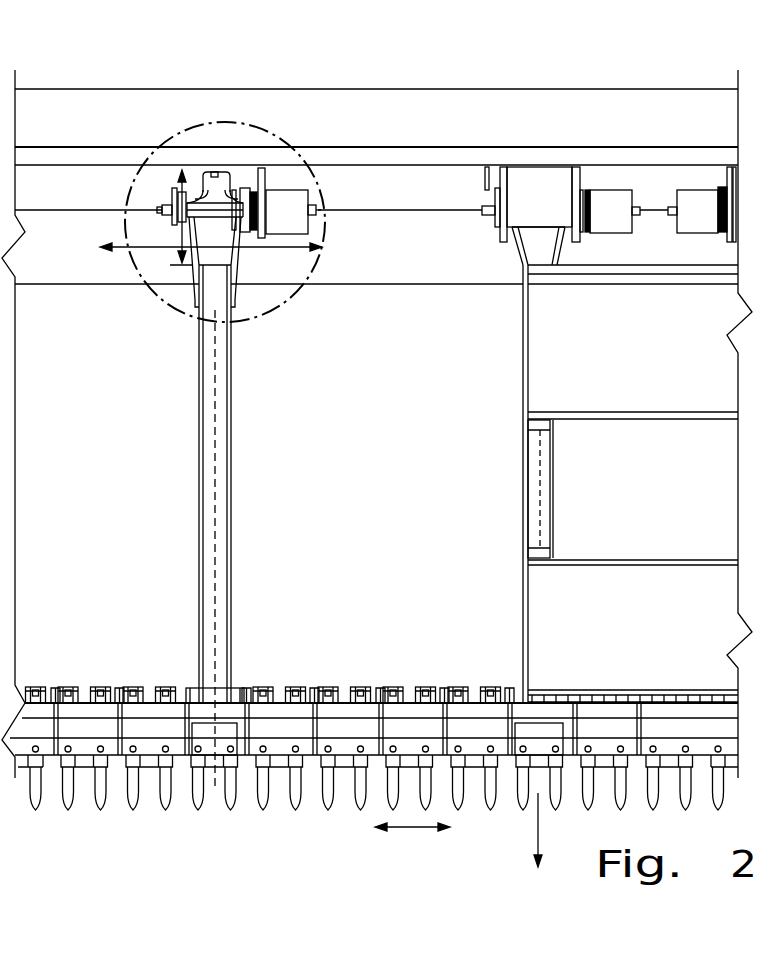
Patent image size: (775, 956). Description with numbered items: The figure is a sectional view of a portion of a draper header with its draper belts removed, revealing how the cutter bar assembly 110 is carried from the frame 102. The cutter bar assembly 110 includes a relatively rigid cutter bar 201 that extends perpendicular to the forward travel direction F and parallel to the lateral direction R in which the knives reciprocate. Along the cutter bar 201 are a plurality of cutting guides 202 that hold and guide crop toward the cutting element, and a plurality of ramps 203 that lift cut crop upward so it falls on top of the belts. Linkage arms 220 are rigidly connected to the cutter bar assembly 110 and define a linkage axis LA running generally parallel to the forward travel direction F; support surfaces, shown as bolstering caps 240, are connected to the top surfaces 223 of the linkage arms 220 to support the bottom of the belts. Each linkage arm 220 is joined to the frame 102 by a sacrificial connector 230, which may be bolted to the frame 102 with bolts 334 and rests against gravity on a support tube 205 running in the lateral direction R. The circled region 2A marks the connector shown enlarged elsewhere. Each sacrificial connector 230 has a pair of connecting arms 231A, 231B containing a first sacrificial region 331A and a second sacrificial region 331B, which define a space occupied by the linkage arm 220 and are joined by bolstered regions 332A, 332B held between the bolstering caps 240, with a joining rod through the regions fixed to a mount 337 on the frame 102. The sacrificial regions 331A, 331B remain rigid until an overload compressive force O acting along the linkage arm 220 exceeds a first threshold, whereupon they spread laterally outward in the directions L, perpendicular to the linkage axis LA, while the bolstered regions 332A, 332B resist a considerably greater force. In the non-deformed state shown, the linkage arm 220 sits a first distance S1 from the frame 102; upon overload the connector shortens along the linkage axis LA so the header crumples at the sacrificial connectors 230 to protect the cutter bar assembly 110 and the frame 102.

The frame 102 is at (466, 112).
The cutter bar assembly 110 is at (337, 666).
The cutter bar 201 is at (183, 712).
The cutting guides 202 is at (165, 798).
The ramps 203 is at (138, 712).
The support tube 205 is at (69, 285).
The linkage arm 220 is at (232, 418).
The top surface 223 is at (530, 485).
The sacrificial connector 230 is at (140, 186).
The first connecting arm 231A is at (185, 280).
The second connecting arm 231B is at (250, 257).
The bolstering cap 240 is at (165, 192).
The first sacrificial region 331A is at (193, 268).
The second sacrificial region 331B is at (247, 262).
The first bolstered region 332A is at (187, 195).
The second bolstered region 332B is at (240, 190).
The bolts 334 is at (215, 172).
The mount 337 is at (272, 180).
The detail region 2A is at (120, 202).
The first distance S1 is at (163, 195).
The lateral deformation direction L is at (122, 262).
The linkage axis LA is at (215, 538).
The overload force O is at (213, 383).
The lateral direction R is at (412, 840).
The forward travel direction F is at (545, 830).